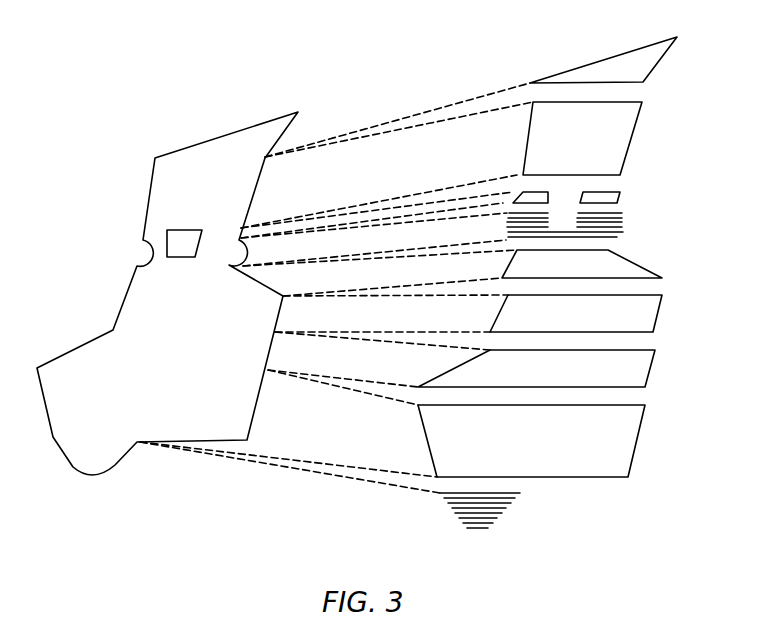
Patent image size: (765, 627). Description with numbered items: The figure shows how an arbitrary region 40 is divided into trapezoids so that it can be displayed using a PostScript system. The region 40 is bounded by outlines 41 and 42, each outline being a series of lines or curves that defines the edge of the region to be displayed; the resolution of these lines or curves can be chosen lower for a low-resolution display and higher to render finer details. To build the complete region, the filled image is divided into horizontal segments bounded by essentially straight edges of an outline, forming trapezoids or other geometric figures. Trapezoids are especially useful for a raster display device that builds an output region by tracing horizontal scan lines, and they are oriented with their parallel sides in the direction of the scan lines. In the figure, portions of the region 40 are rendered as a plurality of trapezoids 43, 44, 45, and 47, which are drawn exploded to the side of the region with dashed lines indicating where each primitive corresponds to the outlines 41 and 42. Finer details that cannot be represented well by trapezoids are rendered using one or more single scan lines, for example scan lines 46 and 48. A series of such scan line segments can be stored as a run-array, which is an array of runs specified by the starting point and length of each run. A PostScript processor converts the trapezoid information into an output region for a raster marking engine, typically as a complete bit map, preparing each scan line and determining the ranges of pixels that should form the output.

The arbitrary region 40 is at (110, 299).
The outline 41 is at (212, 132).
The outline 42 is at (183, 257).
The trapezoid 43 is at (585, 62).
The trapezoid 44 is at (633, 140).
The trapezoid 45 is at (550, 190).
The scan line 46 is at (623, 228).
The trapezoid 47 is at (640, 433).
The scan line 48 is at (500, 520).